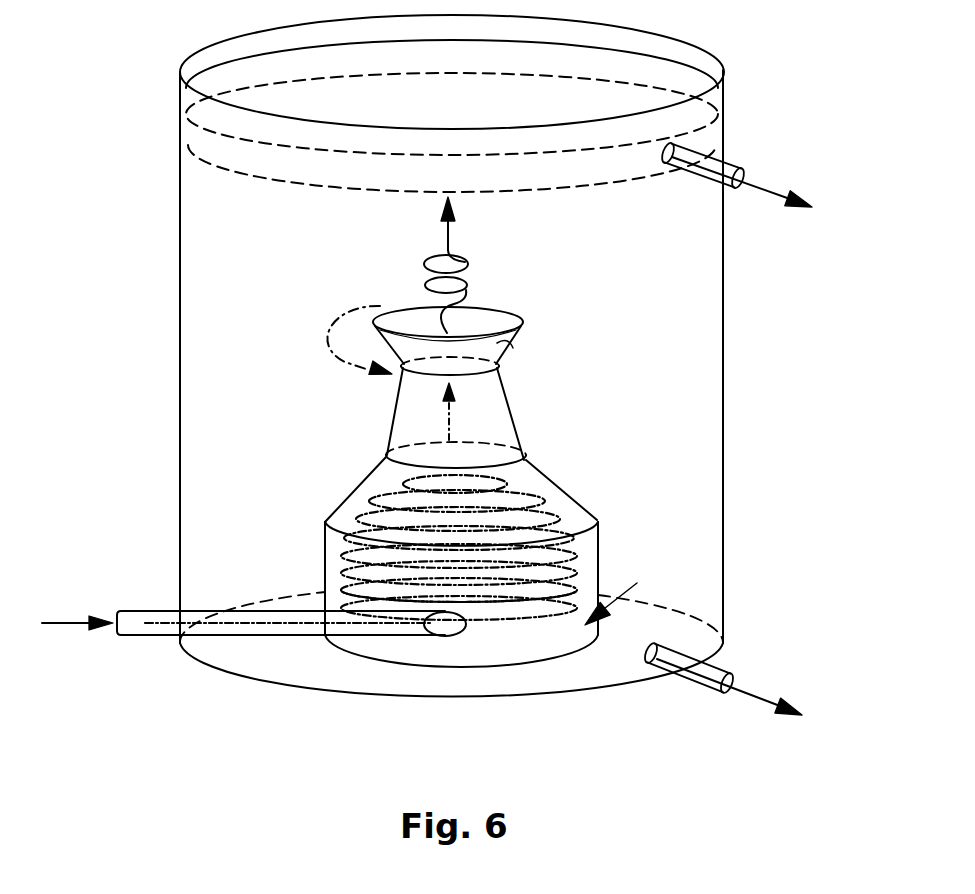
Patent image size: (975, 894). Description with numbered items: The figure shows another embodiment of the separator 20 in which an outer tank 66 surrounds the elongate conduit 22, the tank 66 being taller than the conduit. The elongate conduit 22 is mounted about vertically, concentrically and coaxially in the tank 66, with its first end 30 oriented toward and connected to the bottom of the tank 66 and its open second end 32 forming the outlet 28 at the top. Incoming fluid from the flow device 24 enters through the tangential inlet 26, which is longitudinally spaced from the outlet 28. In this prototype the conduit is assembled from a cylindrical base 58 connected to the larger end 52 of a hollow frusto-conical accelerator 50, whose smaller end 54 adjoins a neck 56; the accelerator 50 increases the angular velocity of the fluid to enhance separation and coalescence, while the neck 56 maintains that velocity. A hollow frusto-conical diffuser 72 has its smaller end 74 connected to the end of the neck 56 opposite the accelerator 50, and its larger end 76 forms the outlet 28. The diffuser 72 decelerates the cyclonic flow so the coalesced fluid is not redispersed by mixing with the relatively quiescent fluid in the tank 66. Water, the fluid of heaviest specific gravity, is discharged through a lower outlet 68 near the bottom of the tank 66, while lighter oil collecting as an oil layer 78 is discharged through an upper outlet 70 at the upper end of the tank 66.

The separator 20 is at (150, 378).
The elongate conduit 22 is at (305, 563).
The flow device 24 is at (266, 603).
The tangential inlet 26 is at (420, 630).
The outlet 28 is at (410, 322).
The first end 30 is at (625, 594).
The open second end 32 is at (478, 382).
The accelerator 50 is at (545, 489).
The larger end 52 is at (590, 517).
The smaller end 54 is at (507, 466).
The neck 56 is at (473, 420).
The cylindrical base 58 is at (580, 580).
The outer tank 66 is at (732, 393).
The lower outlet 68 is at (718, 664).
The upper outlet 70 is at (727, 158).
The diffuser 72 is at (468, 345).
The smaller end 74 is at (499, 363).
The larger end 76 is at (512, 345).
The oil layer 78 is at (203, 143).